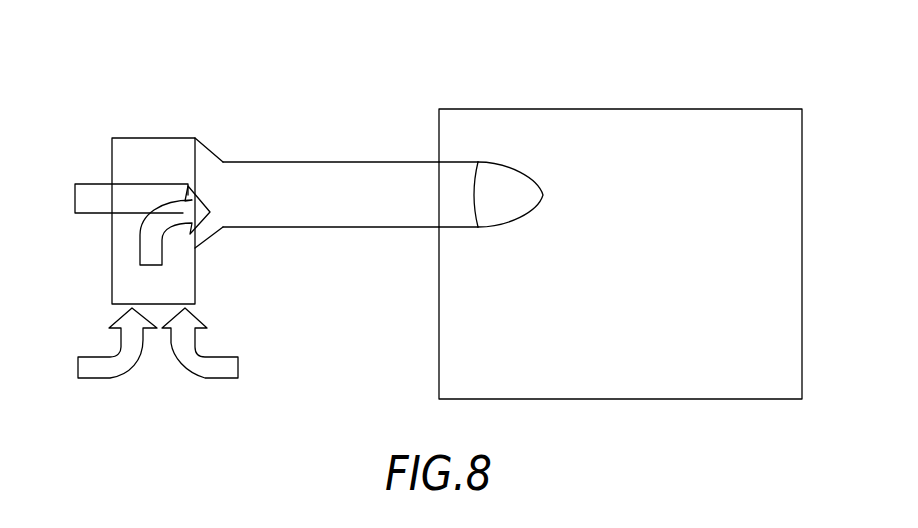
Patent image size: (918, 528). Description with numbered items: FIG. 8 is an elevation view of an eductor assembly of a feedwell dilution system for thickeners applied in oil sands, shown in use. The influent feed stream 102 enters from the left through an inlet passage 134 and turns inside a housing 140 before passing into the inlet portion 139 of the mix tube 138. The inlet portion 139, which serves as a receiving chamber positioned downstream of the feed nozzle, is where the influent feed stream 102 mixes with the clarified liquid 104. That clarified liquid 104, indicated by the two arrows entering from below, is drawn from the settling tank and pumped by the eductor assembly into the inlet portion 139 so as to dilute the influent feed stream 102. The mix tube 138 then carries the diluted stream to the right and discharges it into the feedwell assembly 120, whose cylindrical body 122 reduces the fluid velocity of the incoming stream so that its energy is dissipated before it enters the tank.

The influent feed stream 102 is at (95, 182).
The clarified liquid 104 is at (205, 378).
The feedwell assembly 120 is at (745, 97).
The cylindrical body 122 is at (439, 352).
The inlet flow 134 is at (92, 213).
The mix tube 138 is at (297, 227).
The inlet portion 139 is at (205, 162).
The housing 140 is at (148, 138).